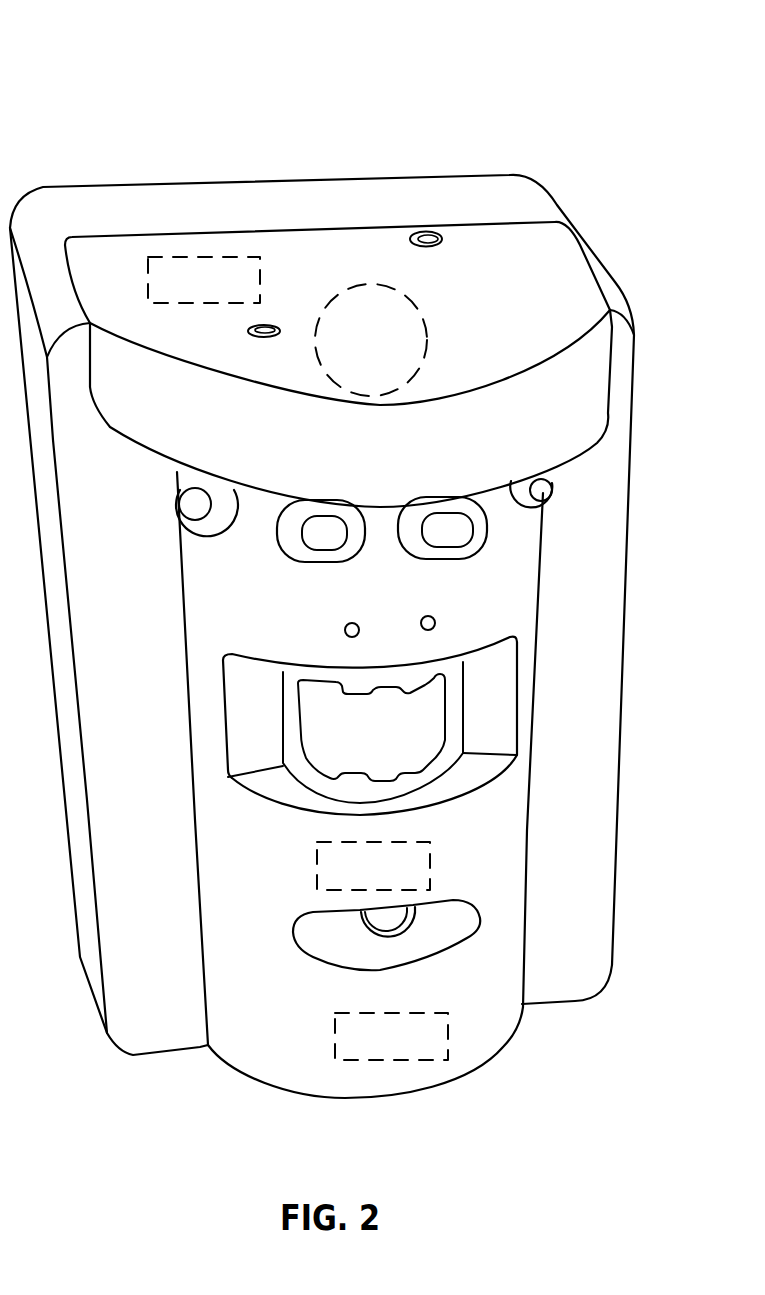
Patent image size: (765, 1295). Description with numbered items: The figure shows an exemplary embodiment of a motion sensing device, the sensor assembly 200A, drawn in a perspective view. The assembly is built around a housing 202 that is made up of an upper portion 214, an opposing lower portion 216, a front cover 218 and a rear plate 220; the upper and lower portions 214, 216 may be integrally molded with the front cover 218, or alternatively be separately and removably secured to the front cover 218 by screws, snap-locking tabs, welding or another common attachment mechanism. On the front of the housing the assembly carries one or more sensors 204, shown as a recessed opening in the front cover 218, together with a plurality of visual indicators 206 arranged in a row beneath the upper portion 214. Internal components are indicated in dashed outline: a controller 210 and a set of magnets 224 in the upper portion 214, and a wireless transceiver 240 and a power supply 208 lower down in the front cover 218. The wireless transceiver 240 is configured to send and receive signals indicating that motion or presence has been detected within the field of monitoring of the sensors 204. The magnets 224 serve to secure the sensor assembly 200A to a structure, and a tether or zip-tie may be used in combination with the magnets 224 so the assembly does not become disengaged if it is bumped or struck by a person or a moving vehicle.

The sensor assembly 200A is at (568, 56).
The housing 202 is at (543, 310).
The sensor 204 is at (448, 742).
The visual indicators 206 is at (203, 512).
The power supply 208 is at (391, 1036).
The controller 210 is at (204, 280).
The upper portion 214 is at (503, 255).
The lower portion 216 is at (288, 1075).
The front cover 218 is at (390, 1078).
The rear plate 220 is at (353, 217).
The magnets 224 is at (371, 340).
The wireless transceiver 240 is at (373, 866).